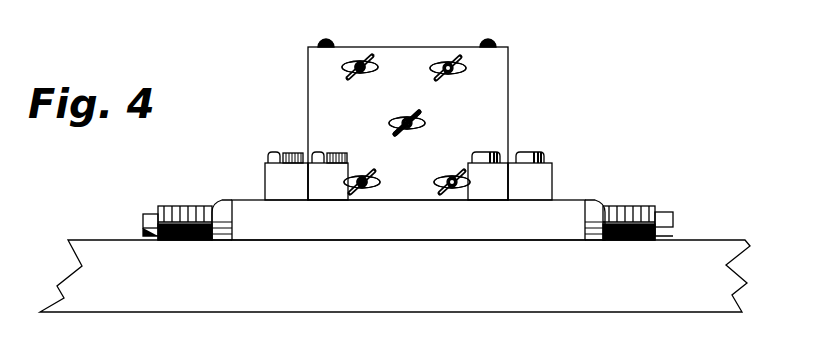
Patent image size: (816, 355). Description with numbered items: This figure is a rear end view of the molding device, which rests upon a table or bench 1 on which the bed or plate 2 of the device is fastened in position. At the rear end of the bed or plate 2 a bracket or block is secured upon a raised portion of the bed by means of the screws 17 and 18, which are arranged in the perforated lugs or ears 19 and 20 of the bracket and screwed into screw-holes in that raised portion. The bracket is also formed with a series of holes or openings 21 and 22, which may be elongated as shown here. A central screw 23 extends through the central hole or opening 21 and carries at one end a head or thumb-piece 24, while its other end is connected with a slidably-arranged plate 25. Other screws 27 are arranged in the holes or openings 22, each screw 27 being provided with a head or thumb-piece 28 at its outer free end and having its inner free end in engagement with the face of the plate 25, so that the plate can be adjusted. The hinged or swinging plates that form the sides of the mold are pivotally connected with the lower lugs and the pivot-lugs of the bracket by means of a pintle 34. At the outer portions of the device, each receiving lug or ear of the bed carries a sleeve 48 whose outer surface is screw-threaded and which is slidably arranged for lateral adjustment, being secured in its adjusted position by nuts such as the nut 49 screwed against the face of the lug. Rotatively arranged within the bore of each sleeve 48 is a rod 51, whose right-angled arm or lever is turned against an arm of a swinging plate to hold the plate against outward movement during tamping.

The table or bench 1 is at (625, 303).
The bed or plate 2 is at (384, 240).
The screw 17 is at (282, 152).
The screw 18 is at (318, 153).
The perforated lug or ear 19 is at (272, 176).
The perforated lug or ear 20 is at (331, 194).
The central hole or opening 21 is at (392, 121).
The hole or opening 22 is at (341, 66).
The central screw 23 is at (407, 117).
The head or thumb-piece 24 is at (421, 113).
The slidably-arranged plate 25 is at (497, 57).
The screw 27 is at (361, 62).
The head or thumb-piece 28 is at (380, 62).
The pintle 34 is at (326, 40).
The sleeve 48 is at (190, 206).
The nut 49 is at (221, 202).
The rod 51 is at (160, 220).